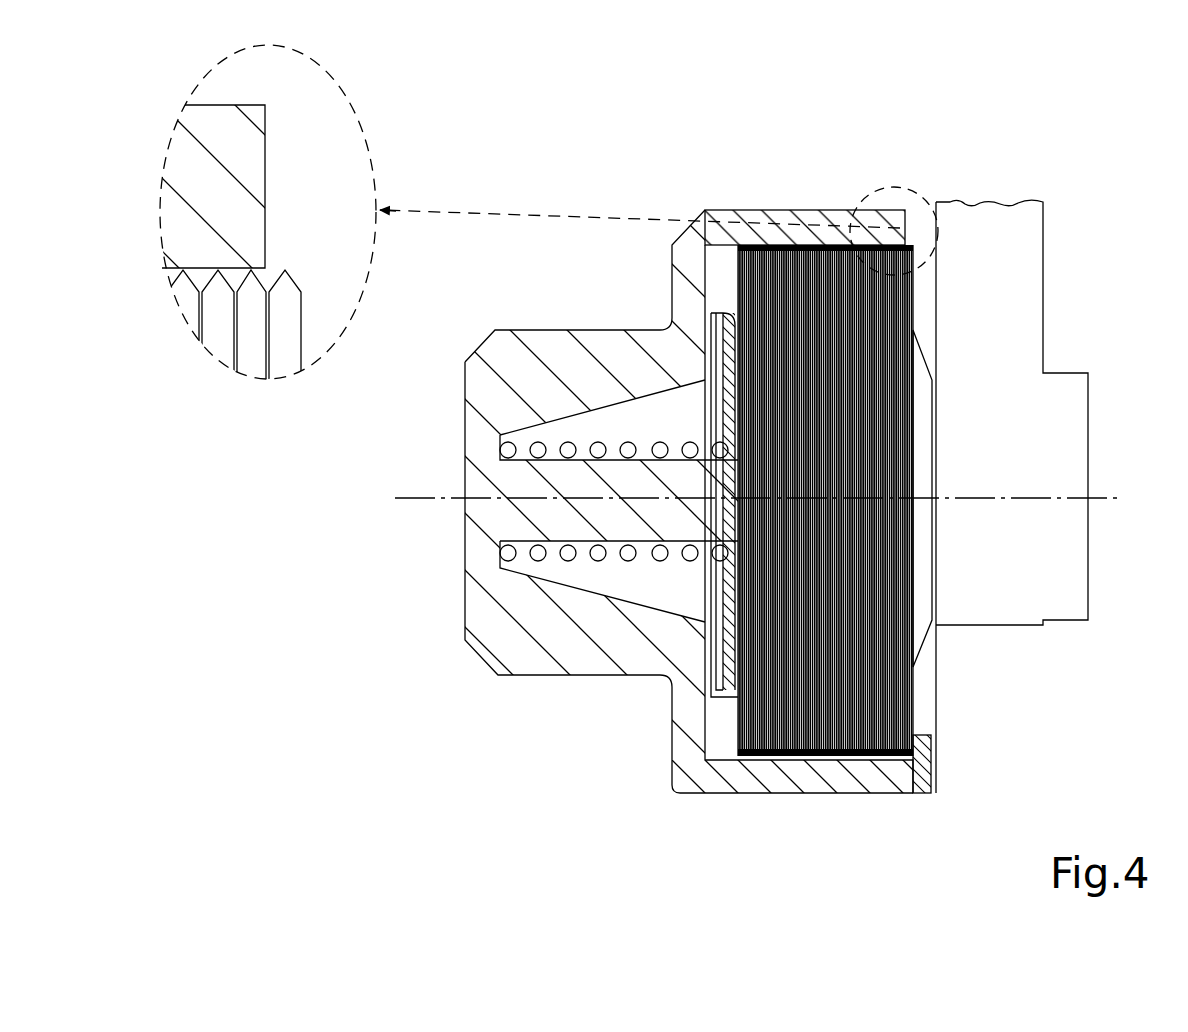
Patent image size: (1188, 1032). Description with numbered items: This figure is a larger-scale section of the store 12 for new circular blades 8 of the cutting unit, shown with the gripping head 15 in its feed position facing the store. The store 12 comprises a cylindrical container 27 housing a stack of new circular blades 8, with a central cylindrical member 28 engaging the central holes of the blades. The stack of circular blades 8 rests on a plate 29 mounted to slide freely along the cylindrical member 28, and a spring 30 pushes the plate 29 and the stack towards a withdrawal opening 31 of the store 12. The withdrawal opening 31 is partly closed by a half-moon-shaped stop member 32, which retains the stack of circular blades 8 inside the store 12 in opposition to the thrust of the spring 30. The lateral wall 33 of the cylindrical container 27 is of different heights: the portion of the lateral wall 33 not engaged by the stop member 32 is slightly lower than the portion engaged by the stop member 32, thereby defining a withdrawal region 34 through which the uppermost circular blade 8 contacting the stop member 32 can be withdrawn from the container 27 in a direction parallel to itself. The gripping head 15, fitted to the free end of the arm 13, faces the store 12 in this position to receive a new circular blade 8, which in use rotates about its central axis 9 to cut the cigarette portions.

The circular blade 8 is at (845, 756).
The central axis 9 is at (1112, 497).
The store 12 is at (476, 721).
The arm 13 is at (1035, 285).
The gripping head 15 is at (925, 632).
The cylindrical container 27 is at (751, 803).
The central cylindrical member 28 is at (576, 472).
The plate 29 is at (722, 318).
The spring 30 is at (500, 568).
The withdrawal opening 31 is at (1004, 705).
The half-moon-shaped stop member 32 is at (931, 775).
The lateral wall 33 is at (790, 215).
The withdrawal region 34 is at (268, 203).